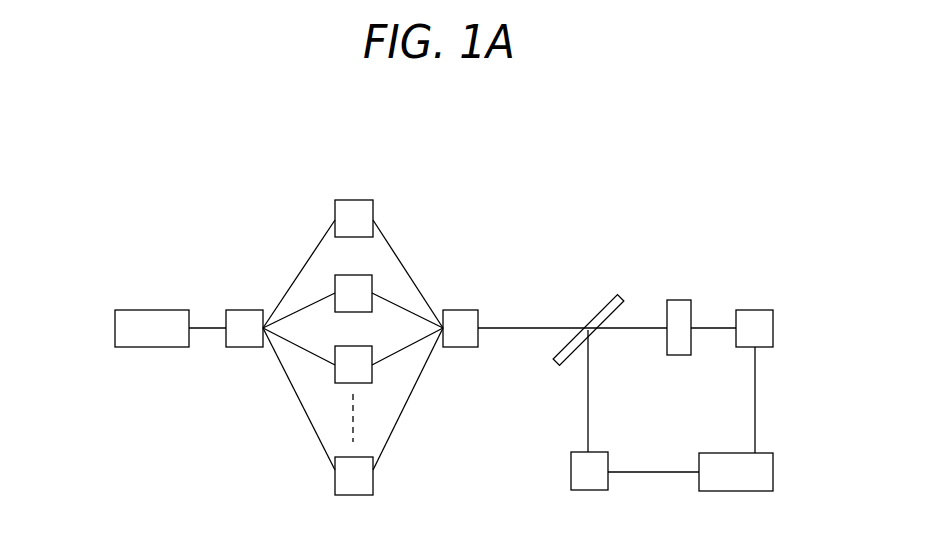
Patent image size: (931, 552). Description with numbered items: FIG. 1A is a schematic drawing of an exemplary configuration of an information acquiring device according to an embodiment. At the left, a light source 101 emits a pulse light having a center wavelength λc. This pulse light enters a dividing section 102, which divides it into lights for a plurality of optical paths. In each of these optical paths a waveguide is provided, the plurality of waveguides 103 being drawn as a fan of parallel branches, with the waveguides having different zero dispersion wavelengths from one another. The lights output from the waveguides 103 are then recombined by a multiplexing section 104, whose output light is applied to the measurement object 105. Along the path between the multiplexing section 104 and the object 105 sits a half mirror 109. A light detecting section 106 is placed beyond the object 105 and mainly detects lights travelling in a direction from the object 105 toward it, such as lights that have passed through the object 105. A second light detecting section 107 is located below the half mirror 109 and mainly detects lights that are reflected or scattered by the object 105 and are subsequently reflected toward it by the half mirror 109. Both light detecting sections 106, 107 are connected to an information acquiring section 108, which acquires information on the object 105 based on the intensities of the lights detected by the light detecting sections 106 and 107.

The light source 101 is at (115, 328).
The dividing section 102 is at (248, 310).
The waveguides 103 is at (386, 192).
The multiplexing section 104 is at (464, 310).
The object 105 is at (680, 300).
The light detecting section 106 is at (773, 330).
The light detecting section 107 is at (571, 470).
The information acquiring section 108 is at (773, 472).
The half mirror 109 is at (556, 353).